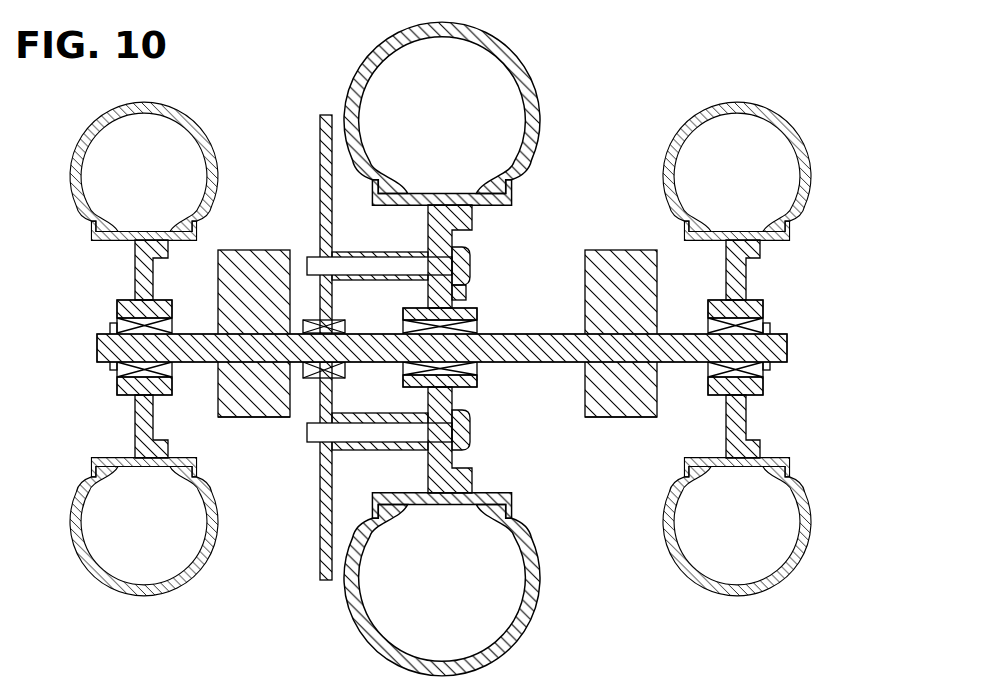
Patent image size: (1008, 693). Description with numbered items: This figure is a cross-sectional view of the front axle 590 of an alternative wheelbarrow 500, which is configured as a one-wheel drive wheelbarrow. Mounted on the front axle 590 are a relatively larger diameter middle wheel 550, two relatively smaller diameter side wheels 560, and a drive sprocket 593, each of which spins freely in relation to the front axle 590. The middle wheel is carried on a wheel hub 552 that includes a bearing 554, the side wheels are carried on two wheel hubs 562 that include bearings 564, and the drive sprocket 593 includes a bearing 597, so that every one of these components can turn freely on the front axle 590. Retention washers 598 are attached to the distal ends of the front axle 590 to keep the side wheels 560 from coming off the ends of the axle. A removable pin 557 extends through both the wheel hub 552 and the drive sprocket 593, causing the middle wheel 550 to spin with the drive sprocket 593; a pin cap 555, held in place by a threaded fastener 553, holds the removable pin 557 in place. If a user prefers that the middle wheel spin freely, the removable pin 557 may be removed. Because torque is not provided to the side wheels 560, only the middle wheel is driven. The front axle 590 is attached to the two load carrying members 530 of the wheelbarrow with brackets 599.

The wheelbarrow 500 is at (813, 94).
The load carrying members 530 is at (258, 262).
The relatively larger diameter middle wheel 550 is at (510, 645).
The wheel hub 552 is at (460, 456).
The threaded fastener 553 is at (462, 293).
The bearing 554 is at (478, 372).
The pin cap 555 is at (470, 268).
The removable pin 557 is at (407, 263).
The relatively smaller diameter side wheels 560 is at (137, 597).
The wheel hubs 562 is at (135, 280).
The bearings 564 is at (128, 392).
The front axle 590 is at (97, 348).
The drive sprocket 593 is at (318, 560).
The bearing 597 is at (305, 395).
The retention washers 598 is at (118, 372).
The brackets 599 is at (262, 417).